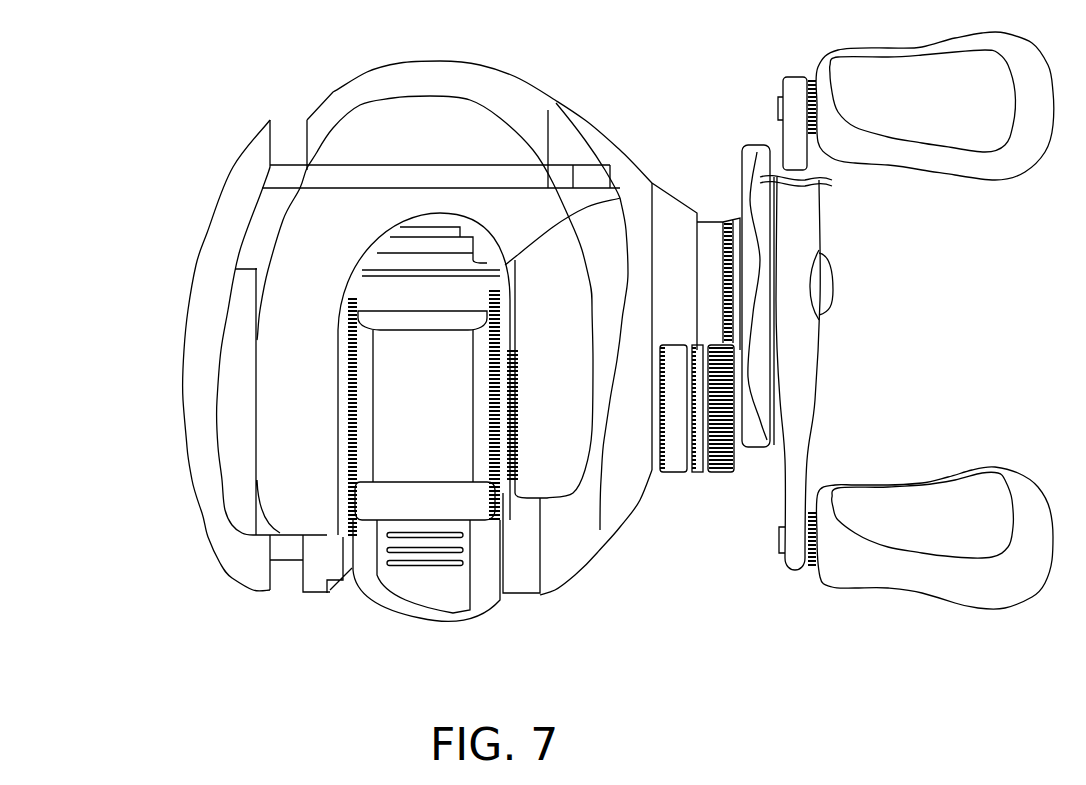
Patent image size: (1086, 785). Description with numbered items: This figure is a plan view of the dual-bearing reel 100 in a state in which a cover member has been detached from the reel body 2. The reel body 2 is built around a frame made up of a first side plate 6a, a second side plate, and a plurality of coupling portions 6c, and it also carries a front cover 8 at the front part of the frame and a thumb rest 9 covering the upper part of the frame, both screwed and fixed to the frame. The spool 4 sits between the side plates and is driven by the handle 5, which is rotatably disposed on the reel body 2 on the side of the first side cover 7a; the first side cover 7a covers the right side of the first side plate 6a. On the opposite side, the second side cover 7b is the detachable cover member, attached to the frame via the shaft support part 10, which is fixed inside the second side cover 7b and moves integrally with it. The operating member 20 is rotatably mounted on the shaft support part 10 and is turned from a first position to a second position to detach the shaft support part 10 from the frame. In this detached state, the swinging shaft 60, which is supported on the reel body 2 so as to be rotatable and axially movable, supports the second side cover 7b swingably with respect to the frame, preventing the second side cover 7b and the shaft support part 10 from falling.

The dual-bearing reel 100 is at (150, 98).
The reel body 2 is at (319, 99).
The front cover 8 is at (388, 88).
The thumb rest 9 is at (480, 160).
The first side plate 6a is at (622, 198).
The swinging shaft 60 is at (283, 183).
The second side cover 7b is at (207, 233).
The shaft support part 10 is at (256, 303).
The operating member 20 is at (230, 396).
The handle 5 is at (800, 227).
The first side cover 7a is at (600, 532).
The coupling portion 6c is at (345, 585).
The spool 4 is at (425, 435).